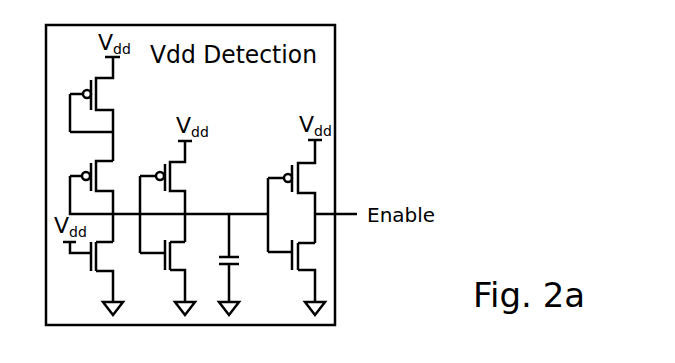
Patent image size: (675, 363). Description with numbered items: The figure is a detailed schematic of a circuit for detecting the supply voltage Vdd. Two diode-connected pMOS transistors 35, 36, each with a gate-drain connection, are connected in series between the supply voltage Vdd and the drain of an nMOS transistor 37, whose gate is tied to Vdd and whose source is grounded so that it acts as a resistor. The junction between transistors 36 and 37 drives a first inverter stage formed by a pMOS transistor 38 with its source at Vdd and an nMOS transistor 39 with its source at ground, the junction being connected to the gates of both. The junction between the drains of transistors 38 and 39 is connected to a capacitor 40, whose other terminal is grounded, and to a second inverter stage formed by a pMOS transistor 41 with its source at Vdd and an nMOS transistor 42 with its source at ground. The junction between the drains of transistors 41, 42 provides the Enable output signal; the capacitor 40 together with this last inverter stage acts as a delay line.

The diode-connected pMOS transistor 35 is at (91, 80).
The diode-connected pMOS transistor 36 is at (91, 163).
The nMOS transistor 37 is at (89, 262).
The pMOS transistor 38 is at (165, 163).
The nMOS transistor 39 is at (166, 254).
The capacitor 40 is at (224, 258).
The pMOS transistor 41 is at (292, 166).
The nMOS transistor 42 is at (292, 259).